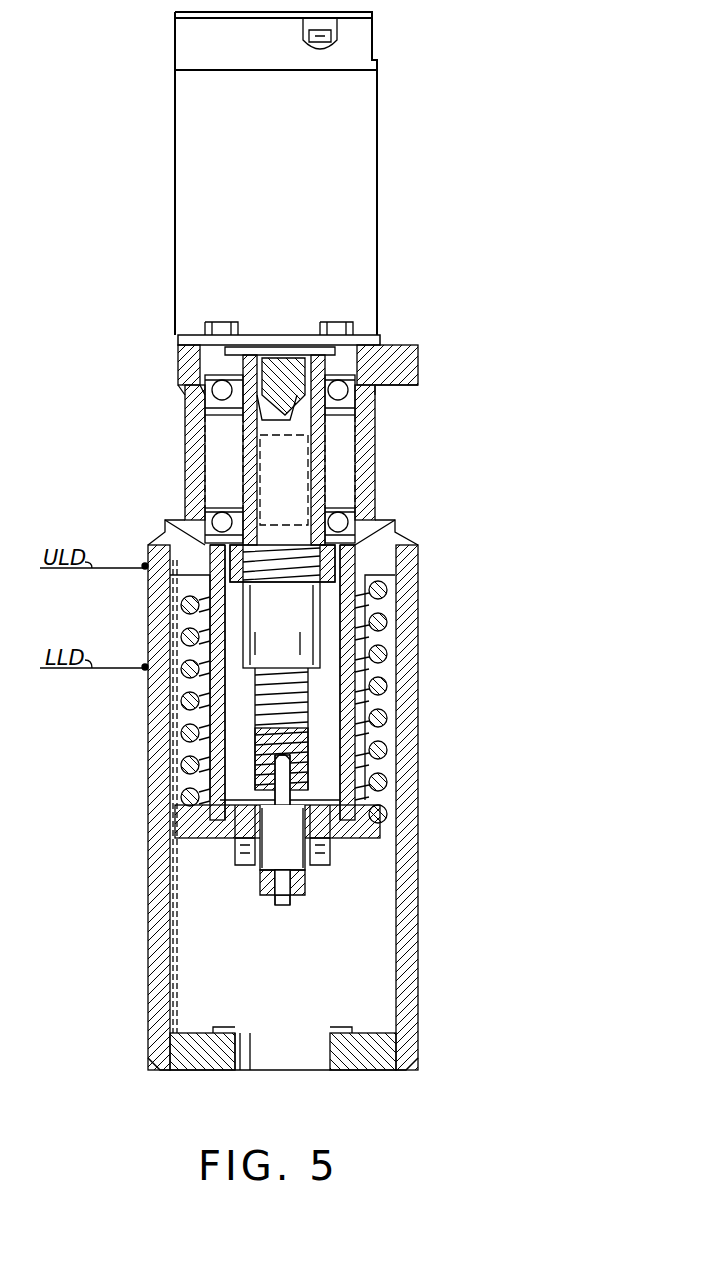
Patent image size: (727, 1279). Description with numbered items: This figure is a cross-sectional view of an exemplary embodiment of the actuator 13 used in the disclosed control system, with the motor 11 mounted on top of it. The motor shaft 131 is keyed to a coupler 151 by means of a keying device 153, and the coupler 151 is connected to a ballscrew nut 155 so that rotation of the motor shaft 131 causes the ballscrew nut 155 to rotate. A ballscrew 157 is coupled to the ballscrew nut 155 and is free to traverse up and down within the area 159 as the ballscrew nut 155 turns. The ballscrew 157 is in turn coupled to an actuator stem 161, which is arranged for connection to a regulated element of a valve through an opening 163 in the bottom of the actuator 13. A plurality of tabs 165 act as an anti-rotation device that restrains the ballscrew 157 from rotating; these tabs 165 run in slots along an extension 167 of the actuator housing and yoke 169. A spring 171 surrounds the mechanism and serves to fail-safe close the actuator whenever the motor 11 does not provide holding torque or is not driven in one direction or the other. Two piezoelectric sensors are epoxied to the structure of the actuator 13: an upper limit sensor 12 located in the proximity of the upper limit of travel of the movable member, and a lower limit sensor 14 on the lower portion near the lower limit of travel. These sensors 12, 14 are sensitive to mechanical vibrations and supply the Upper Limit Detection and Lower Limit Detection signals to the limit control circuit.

The motor 11 is at (292, 184).
The upper limit sensor 12 is at (143, 565).
The actuator 13 is at (418, 797).
The lower limit sensor 14 is at (143, 665).
The motor shaft 131 is at (295, 375).
The coupler 151 is at (263, 392).
The keying device 153 is at (225, 410).
The ballscrew nut 155 is at (287, 618).
The ballscrew 157 is at (305, 700).
The area 159 is at (305, 512).
The actuator stem 161 is at (298, 893).
The opening 163 is at (328, 1052).
The tabs 165 is at (212, 680).
The extension 167 is at (188, 620).
The actuator housing and yoke 169 is at (185, 467).
The spring 171 is at (192, 732).